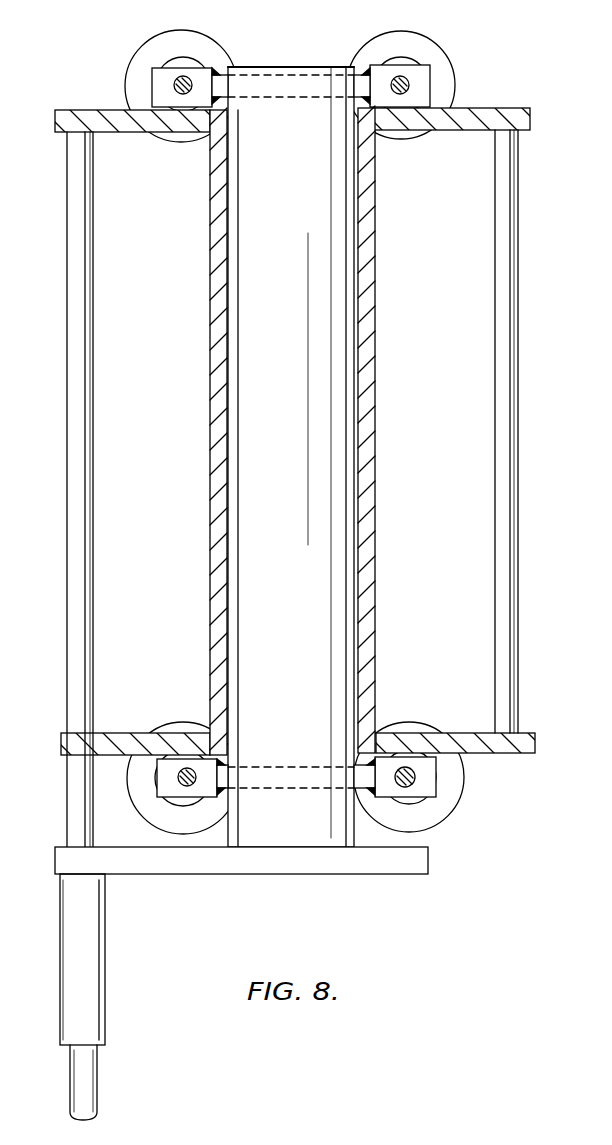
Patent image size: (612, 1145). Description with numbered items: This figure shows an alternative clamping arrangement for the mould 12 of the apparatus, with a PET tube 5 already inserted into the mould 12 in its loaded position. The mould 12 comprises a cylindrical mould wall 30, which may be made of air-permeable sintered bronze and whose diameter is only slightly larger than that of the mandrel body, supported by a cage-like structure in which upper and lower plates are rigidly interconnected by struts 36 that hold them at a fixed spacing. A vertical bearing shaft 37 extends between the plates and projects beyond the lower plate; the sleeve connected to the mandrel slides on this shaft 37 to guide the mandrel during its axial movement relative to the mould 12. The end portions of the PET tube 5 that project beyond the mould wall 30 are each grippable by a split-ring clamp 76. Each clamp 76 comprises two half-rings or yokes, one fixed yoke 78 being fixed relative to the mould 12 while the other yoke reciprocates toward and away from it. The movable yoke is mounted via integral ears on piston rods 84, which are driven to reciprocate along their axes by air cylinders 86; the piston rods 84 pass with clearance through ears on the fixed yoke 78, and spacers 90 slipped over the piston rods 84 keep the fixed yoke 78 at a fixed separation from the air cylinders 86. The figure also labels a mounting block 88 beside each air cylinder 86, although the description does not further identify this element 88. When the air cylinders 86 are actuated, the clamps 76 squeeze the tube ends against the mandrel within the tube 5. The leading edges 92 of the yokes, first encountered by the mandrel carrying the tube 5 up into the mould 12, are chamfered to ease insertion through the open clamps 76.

The PET tube 5 is at (338, 60).
The mould 12 is at (202, 280).
The mould wall 30 is at (370, 450).
The struts 36 is at (512, 620).
The bearing shaft 37 is at (80, 622).
The split-ring clamp 76 is at (456, 57).
The fixed yoke 78 is at (277, 82).
The piston rods 84 is at (172, 85).
The air cylinders 86 is at (207, 48).
The mounting block 88 is at (156, 72).
The spacers 90 is at (176, 57).
The leading edges 92 is at (228, 787).